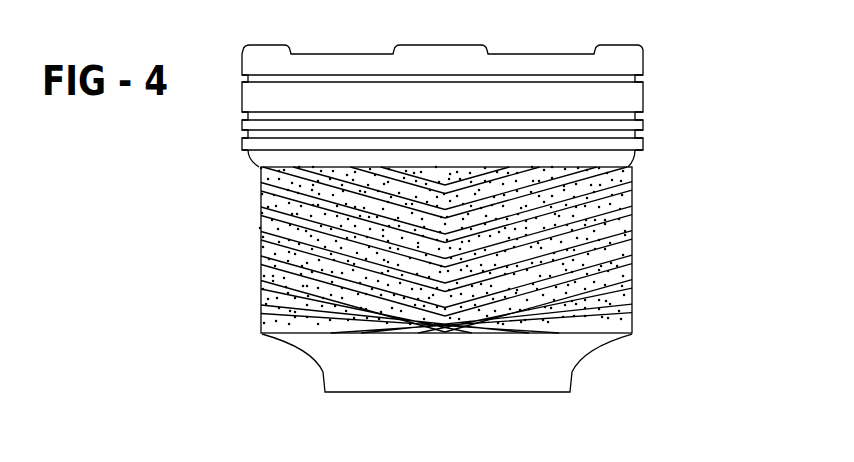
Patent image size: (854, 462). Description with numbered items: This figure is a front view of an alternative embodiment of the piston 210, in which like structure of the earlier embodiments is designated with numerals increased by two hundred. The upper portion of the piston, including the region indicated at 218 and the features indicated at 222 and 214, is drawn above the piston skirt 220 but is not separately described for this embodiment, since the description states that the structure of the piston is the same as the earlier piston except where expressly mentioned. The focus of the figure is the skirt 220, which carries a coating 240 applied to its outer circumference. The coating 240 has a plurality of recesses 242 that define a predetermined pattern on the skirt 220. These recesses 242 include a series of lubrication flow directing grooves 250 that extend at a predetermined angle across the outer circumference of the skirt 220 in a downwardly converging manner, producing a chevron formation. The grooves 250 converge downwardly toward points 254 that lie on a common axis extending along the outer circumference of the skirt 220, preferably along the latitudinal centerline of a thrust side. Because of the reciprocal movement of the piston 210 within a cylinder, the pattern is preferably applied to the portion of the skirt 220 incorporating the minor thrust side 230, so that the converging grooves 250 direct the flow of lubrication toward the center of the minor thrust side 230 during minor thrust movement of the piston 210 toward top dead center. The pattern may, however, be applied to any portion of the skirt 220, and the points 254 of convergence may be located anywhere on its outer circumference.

The piston 210 is at (189, 190).
The terminal cap / insulator ribs 218 is at (690, 52).
The grooves 222 is at (643, 128).
The neck portion 214 is at (702, 158).
The piston skirt 220 is at (657, 203).
The lubrication flow directing grooves 250 is at (261, 284).
The coating 240 is at (632, 241).
The recesses 242 is at (632, 280).
The points of convergence 254 is at (445, 288).
The minor thrust side 230 is at (343, 345).